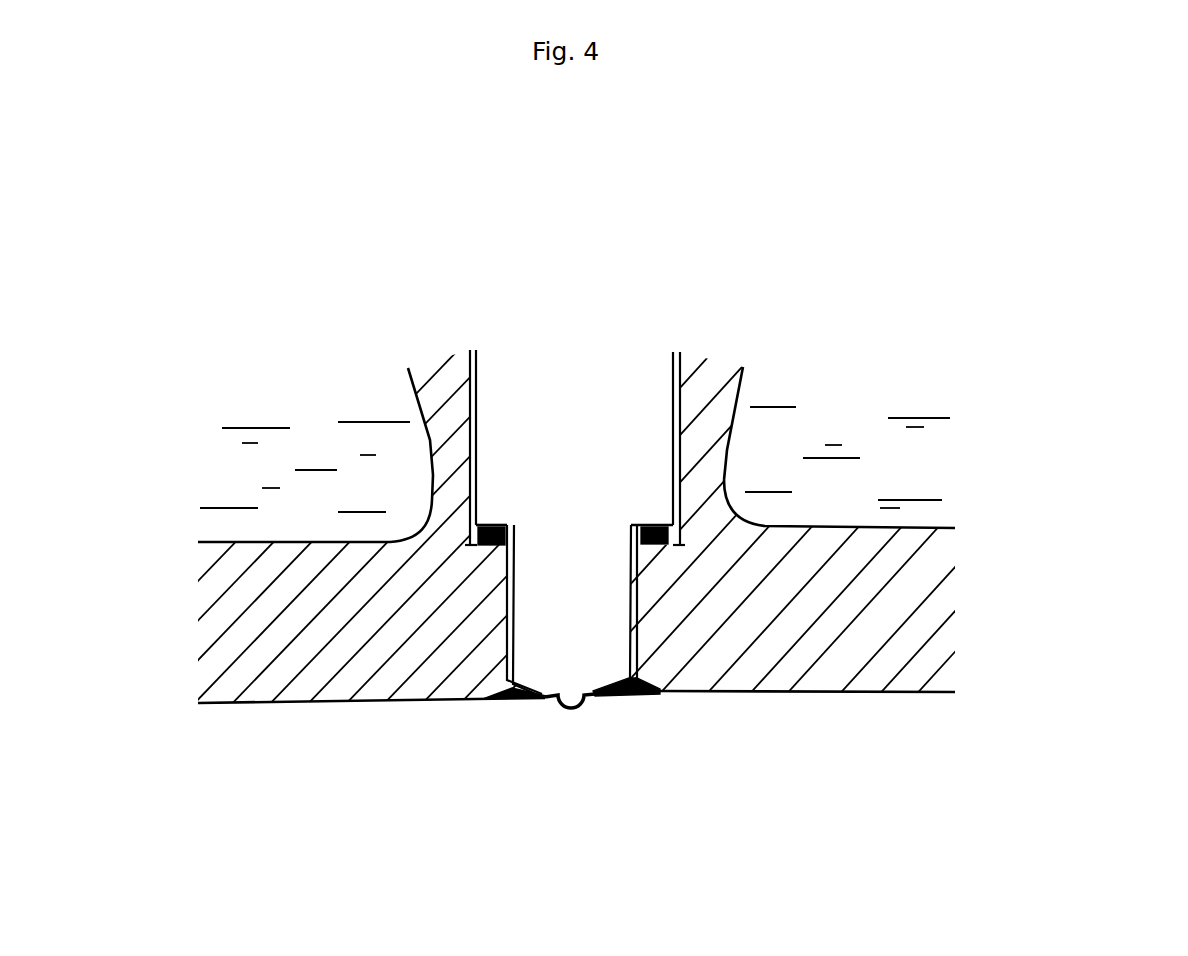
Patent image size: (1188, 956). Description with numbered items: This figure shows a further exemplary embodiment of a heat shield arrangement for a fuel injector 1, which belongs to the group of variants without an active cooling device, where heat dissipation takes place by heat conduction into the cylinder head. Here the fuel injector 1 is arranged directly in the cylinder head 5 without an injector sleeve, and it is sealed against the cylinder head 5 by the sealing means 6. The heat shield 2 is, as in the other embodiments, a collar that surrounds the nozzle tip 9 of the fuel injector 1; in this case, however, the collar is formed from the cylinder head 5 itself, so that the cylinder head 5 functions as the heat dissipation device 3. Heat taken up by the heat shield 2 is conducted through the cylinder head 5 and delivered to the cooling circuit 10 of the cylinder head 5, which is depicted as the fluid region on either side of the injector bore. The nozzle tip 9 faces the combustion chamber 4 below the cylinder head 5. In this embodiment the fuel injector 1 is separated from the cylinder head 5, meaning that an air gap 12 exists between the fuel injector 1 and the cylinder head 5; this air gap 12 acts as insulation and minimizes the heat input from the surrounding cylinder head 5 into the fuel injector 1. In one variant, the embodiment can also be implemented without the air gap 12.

The fuel injector 1 is at (567, 452).
The heat shield 2 is at (615, 700).
The heat dissipation device 3 is at (738, 406).
The combustion chamber 4 is at (341, 763).
The cylinder head 5 is at (927, 627).
The sealing means 6 is at (632, 547).
The nozzle tip 9 is at (577, 708).
The cooling circuit 10 is at (322, 420).
The air gap 12 is at (525, 698).